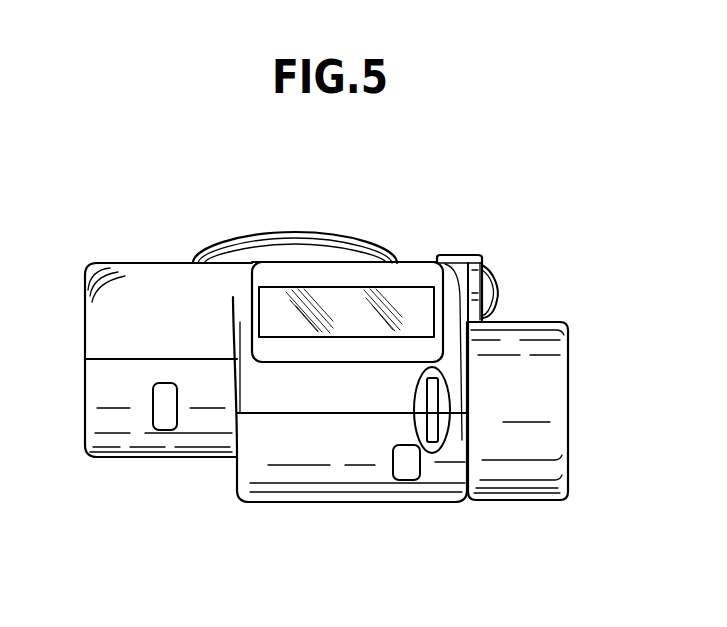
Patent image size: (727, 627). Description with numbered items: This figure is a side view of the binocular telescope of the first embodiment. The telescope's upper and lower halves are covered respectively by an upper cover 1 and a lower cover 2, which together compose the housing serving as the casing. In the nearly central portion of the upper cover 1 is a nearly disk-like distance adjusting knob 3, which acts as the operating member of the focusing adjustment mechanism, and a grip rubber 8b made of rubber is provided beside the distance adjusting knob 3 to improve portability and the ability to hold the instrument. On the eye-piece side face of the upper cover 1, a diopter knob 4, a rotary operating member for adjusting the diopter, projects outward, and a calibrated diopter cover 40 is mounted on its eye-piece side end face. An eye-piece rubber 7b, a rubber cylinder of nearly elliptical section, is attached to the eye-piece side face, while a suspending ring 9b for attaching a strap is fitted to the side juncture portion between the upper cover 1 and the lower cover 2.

The upper cover 1 is at (97, 330).
The lower cover 2 is at (117, 447).
The distance adjusting knob 3 is at (313, 242).
The diopter knob 4 is at (474, 273).
The calibrated diopter cover 40 is at (495, 298).
The eye-piece rubber 7b is at (550, 440).
The grip rubber 8b is at (418, 270).
The suspending ring 9b is at (433, 387).